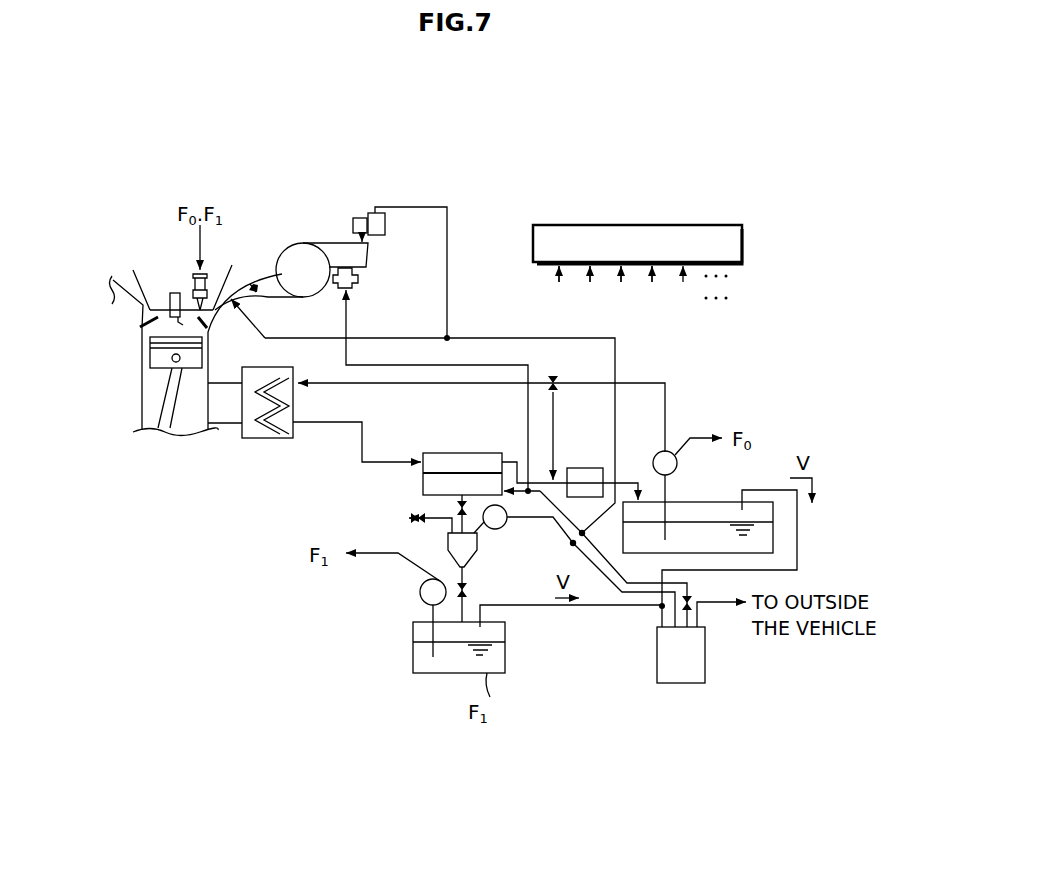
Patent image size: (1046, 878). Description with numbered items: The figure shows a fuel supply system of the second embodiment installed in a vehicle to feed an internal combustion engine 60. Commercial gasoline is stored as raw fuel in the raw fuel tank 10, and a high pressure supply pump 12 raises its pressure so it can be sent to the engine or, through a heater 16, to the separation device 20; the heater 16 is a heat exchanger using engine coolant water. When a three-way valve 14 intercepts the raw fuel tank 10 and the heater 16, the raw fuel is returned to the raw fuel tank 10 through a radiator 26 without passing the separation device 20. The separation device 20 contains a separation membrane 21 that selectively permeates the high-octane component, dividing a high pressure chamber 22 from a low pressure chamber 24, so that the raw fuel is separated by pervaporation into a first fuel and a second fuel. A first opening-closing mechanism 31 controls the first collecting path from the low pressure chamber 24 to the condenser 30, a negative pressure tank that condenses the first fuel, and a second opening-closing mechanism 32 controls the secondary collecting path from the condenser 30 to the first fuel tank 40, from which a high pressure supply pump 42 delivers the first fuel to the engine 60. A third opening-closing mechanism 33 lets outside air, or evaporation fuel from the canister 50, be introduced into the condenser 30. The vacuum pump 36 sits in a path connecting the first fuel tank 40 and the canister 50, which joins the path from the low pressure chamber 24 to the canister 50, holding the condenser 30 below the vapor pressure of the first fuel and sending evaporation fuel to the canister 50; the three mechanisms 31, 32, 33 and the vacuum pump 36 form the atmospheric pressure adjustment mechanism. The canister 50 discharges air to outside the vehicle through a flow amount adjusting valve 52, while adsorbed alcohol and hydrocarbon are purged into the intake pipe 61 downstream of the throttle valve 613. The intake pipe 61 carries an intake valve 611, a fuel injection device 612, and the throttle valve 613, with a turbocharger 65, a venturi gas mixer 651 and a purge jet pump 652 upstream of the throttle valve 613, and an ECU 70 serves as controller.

The raw fuel tank 10 is at (694, 503).
The high pressure supply pump 12 is at (678, 463).
The three-way valve 14 is at (553, 375).
The heater 16 is at (270, 439).
The separation device 20 is at (476, 453).
The separation membrane 21 is at (447, 471).
The high pressure chamber 22 is at (431, 458).
The low pressure chamber 24 is at (423, 486).
The radiator 26 is at (585, 468).
The condenser 30 is at (448, 561).
The first opening-closing mechanism 31 is at (455, 508).
The second opening-closing mechanism 32 is at (468, 590).
The third opening-closing mechanism 33 is at (414, 523).
The vacuum pump 36 is at (503, 528).
The first fuel tank 40 is at (506, 633).
The high pressure supply pump 42 is at (420, 592).
The canister 50 is at (688, 683).
The flow amount adjusting valve 52 is at (690, 600).
The internal combustion engine 60 is at (108, 260).
The intake pipe 61 is at (229, 312).
The turbocharger 65 is at (304, 256).
The ECU 70 is at (704, 225).
The intake valve 611 is at (221, 273).
The fuel injection device 612 is at (193, 287).
The throttle valve 613 is at (257, 283).
The venturi gas mixer 651 is at (361, 280).
The purge jet pump 652 is at (386, 230).